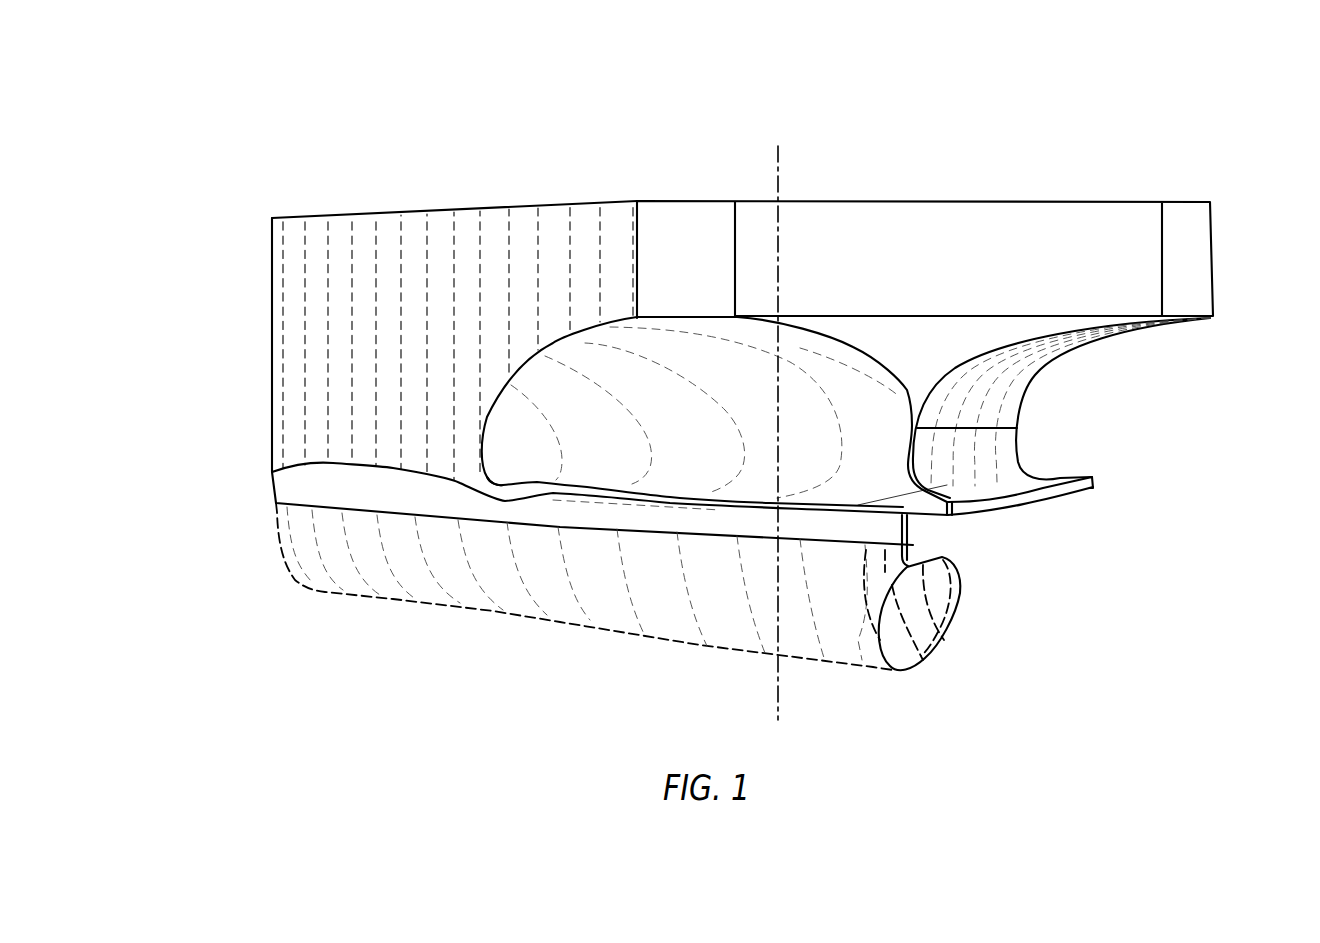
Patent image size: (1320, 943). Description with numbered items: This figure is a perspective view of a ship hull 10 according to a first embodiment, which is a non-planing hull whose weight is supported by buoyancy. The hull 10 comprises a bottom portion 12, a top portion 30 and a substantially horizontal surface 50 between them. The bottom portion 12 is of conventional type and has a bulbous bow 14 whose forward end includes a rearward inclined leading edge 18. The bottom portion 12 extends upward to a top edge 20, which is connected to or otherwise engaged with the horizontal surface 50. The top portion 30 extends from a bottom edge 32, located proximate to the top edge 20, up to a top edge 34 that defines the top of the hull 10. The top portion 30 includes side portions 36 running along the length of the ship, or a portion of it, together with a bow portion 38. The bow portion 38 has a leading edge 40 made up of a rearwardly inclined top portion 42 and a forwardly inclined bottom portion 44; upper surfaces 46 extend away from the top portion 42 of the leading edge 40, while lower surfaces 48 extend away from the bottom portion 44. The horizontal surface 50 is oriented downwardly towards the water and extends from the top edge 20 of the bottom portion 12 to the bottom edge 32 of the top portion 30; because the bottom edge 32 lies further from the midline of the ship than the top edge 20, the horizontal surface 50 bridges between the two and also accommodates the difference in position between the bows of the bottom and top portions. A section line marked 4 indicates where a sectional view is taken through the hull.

The ship hull 10 is at (763, 109).
The bottom portion 12 is at (375, 565).
The bulbous bow 14 is at (969, 614).
The rearward inclined leading edge 18 is at (962, 578).
The top edge 20 is at (565, 503).
The top portion 30 is at (290, 348).
The bottom edge 32 is at (273, 485).
The top edge 34 is at (470, 207).
The side portions 36 is at (388, 268).
The bow portion 38 is at (1075, 377).
The leading edge 40 is at (1017, 428).
The top portion of the leading edge 42 is at (962, 483).
The bottom portion of the leading edge 44 is at (896, 433).
The upper surfaces 46 is at (678, 355).
The lower surfaces 48 is at (842, 490).
The horizontal surface 50 is at (1003, 512).
The section line 4- 4 is at (834, 720).